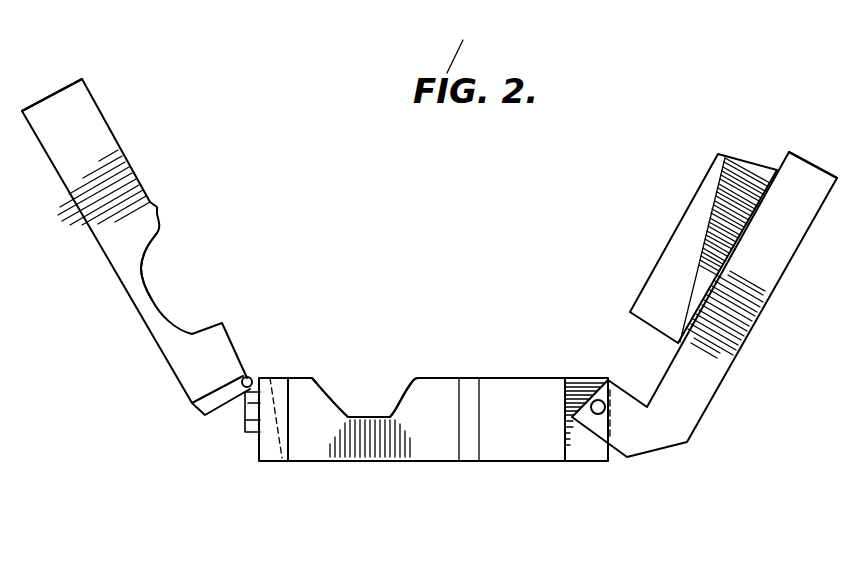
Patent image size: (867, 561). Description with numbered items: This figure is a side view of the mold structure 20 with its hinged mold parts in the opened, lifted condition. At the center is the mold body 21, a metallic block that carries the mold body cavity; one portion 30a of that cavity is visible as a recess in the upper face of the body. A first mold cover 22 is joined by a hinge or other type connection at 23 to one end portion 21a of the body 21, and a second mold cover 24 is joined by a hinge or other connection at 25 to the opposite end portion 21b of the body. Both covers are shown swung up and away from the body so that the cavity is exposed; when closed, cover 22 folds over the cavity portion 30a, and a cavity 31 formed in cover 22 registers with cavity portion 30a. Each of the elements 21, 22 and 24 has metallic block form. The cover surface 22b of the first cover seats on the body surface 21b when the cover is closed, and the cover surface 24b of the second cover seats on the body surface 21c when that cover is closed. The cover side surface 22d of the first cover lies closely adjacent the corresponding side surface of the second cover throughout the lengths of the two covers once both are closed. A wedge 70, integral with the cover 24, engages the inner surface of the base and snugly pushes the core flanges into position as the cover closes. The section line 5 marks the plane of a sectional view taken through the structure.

The mold structure 20 is at (353, 198).
The mold body 21 is at (437, 478).
The end portion of body 21a is at (242, 425).
The opposite end portion of body 21b is at (543, 378).
The body surface 21c is at (302, 377).
The first mold cover 22 is at (143, 343).
The cover surface 22b is at (121, 148).
The cover side surface 22d is at (85, 103).
The hinge connection 23 is at (247, 377).
The second mold cover 24 is at (754, 340).
The cover surface 24b is at (780, 160).
The hinge connection 25 is at (597, 413).
The portion of mold body cavity 30a is at (397, 412).
The cavity in cover 31 is at (146, 288).
The wedge 70 is at (707, 182).
The section line 5- 5 is at (293, 239).